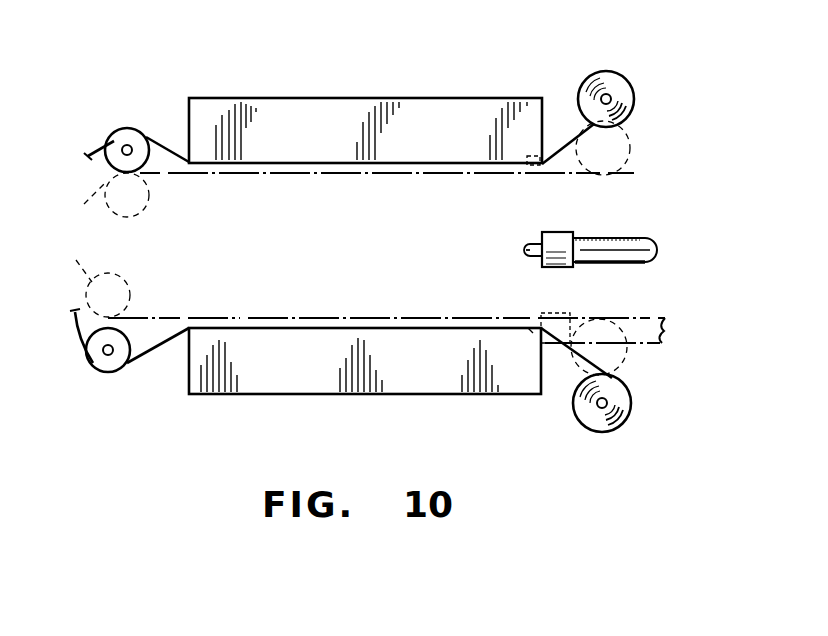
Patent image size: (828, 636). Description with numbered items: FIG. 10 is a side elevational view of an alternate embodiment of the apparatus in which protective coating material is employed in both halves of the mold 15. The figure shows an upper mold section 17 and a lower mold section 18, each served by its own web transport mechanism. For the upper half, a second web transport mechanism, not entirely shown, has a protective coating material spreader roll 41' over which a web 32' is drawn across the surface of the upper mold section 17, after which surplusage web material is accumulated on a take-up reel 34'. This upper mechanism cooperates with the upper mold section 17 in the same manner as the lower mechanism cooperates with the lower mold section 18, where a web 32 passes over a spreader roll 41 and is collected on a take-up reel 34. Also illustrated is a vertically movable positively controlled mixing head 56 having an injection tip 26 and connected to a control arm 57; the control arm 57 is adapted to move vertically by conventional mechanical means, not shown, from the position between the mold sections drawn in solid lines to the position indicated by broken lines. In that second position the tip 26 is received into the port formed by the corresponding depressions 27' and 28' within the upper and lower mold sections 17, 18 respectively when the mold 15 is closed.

The mold 15 is at (539, 70).
The upper mold section 17 is at (243, 108).
The lower mold section 18 is at (235, 386).
The injection tip 26 is at (524, 250).
The depression 27' is at (501, 186).
The depression 28' is at (509, 315).
The web 32 is at (370, 340).
The web 32' is at (136, 143).
The take-up reel 34 is at (599, 395).
The take-up reel 34' is at (616, 102).
The protective coating material spreader roll 41 is at (64, 354).
The protective coating material spreader roll 41' is at (78, 125).
The positively controlled mixing head 56 is at (560, 242).
The control arm 57 is at (645, 245).